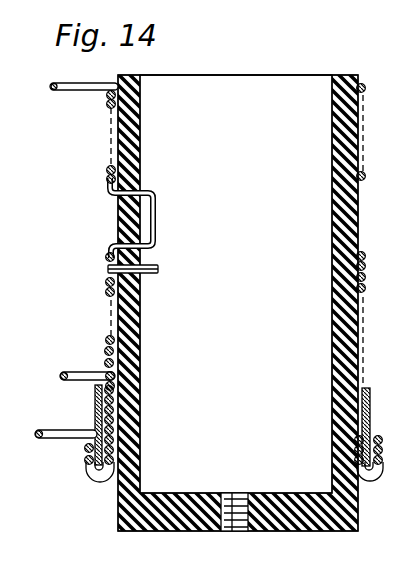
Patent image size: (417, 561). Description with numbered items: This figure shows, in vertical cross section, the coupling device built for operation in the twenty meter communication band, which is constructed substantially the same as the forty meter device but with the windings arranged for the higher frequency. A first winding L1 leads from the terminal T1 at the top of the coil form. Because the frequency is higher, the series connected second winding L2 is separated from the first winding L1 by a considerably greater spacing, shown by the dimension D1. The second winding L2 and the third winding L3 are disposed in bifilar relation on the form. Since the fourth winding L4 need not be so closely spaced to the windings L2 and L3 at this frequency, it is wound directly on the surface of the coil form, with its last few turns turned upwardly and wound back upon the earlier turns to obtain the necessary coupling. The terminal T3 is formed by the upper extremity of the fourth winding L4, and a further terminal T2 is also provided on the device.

The terminal T1 is at (56, 88).
The first winding L1 is at (104, 180).
The dimension D1 is at (358, 178).
The third winding L3 is at (103, 293).
The second winding L2 is at (104, 360).
The terminal T3 is at (66, 373).
The terminal T2 is at (46, 431).
The fourth winding L4 is at (152, 393).